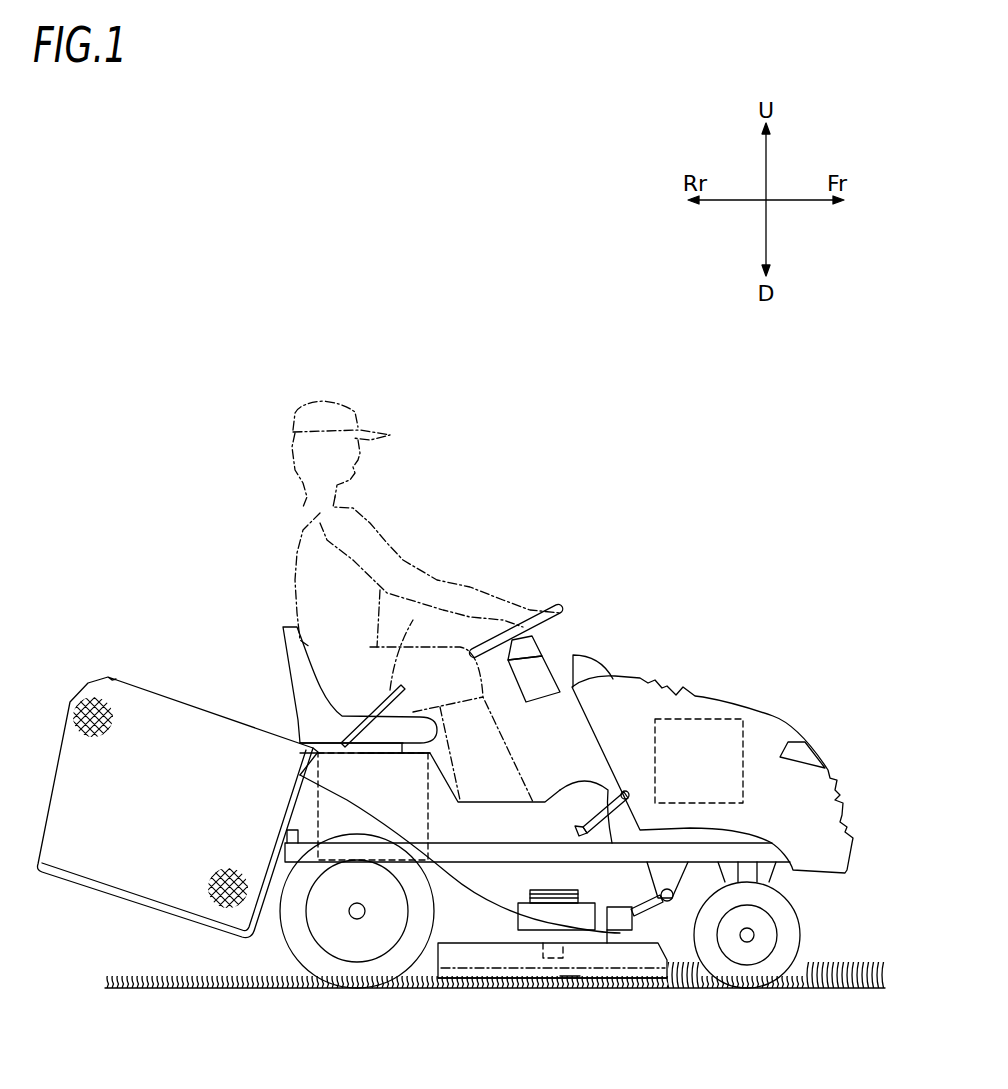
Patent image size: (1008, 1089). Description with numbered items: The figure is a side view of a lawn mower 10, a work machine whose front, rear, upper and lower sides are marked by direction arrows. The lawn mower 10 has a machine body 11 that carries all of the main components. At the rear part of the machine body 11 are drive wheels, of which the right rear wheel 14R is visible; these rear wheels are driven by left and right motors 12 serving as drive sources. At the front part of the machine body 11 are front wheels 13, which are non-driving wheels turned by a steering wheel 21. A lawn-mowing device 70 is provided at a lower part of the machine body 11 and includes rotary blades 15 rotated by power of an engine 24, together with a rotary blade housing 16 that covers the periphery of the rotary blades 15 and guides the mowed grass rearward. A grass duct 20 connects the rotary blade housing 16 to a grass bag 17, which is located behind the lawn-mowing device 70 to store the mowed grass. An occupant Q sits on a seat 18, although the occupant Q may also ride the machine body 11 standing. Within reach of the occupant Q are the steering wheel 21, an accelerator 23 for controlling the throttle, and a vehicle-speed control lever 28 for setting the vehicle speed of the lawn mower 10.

The lawn mower 10 is at (734, 486).
The machine body 11 is at (703, 857).
The motor 12 is at (290, 765).
The front wheel 13 is at (804, 922).
The right rear wheel 14R is at (283, 942).
The rotary blade 15 is at (498, 978).
The rotary blade housing 16 is at (460, 957).
The grass bag 17 is at (187, 697).
The seat 18 is at (291, 628).
The grass duct 20 is at (452, 922).
The steering wheel 21 is at (558, 603).
The accelerator 23 is at (612, 843).
The engine 24 is at (707, 718).
The vehicle-speed control lever 28 is at (401, 680).
The lawn-mowing device 70 is at (571, 982).
The occupant Q is at (297, 532).